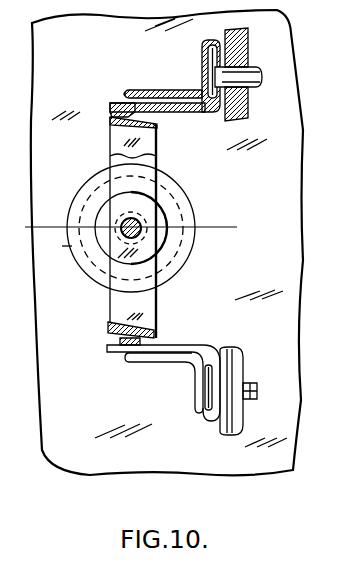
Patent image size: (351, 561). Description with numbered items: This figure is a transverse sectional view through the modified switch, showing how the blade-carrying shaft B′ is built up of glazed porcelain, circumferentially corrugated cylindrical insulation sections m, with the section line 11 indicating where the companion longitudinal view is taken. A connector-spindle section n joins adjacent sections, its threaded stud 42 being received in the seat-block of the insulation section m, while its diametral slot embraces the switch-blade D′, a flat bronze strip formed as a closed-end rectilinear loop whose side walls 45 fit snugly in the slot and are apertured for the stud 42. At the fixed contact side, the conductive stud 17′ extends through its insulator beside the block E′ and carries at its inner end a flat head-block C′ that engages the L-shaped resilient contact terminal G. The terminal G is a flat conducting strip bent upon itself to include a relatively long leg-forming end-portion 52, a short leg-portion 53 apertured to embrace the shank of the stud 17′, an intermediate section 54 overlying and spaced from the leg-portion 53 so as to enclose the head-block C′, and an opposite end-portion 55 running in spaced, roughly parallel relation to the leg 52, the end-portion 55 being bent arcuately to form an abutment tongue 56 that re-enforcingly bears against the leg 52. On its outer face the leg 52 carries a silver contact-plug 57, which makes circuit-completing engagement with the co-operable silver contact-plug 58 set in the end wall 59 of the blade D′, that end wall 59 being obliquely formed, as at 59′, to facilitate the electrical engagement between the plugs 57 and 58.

The section line 11 is at (48, 224).
The stud 17′ is at (262, 76).
The threaded stud 42 is at (122, 235).
The side walls 45 is at (125, 152).
The leg-forming end-portion 52 is at (190, 112).
The leg-portion 53 is at (217, 60).
The intermediate section 54 is at (202, 80).
The end-portion 55 is at (152, 90).
The abutment tongue 56 is at (127, 97).
The contact-plug 57 is at (112, 107).
The contact-plugs 58 is at (127, 122).
The end walls 59 is at (133, 126).
The oblique formation 59′ is at (160, 122).
The blade-carrying shaft B′ is at (193, 258).
The head-block C′ is at (201, 58).
The switch-blade D′ is at (177, 277).
The support block E' E′ is at (249, 108).
The resilient contact terminal G is at (183, 368).
The insulation sections m is at (60, 251).
The connector-spindle section n is at (160, 212).